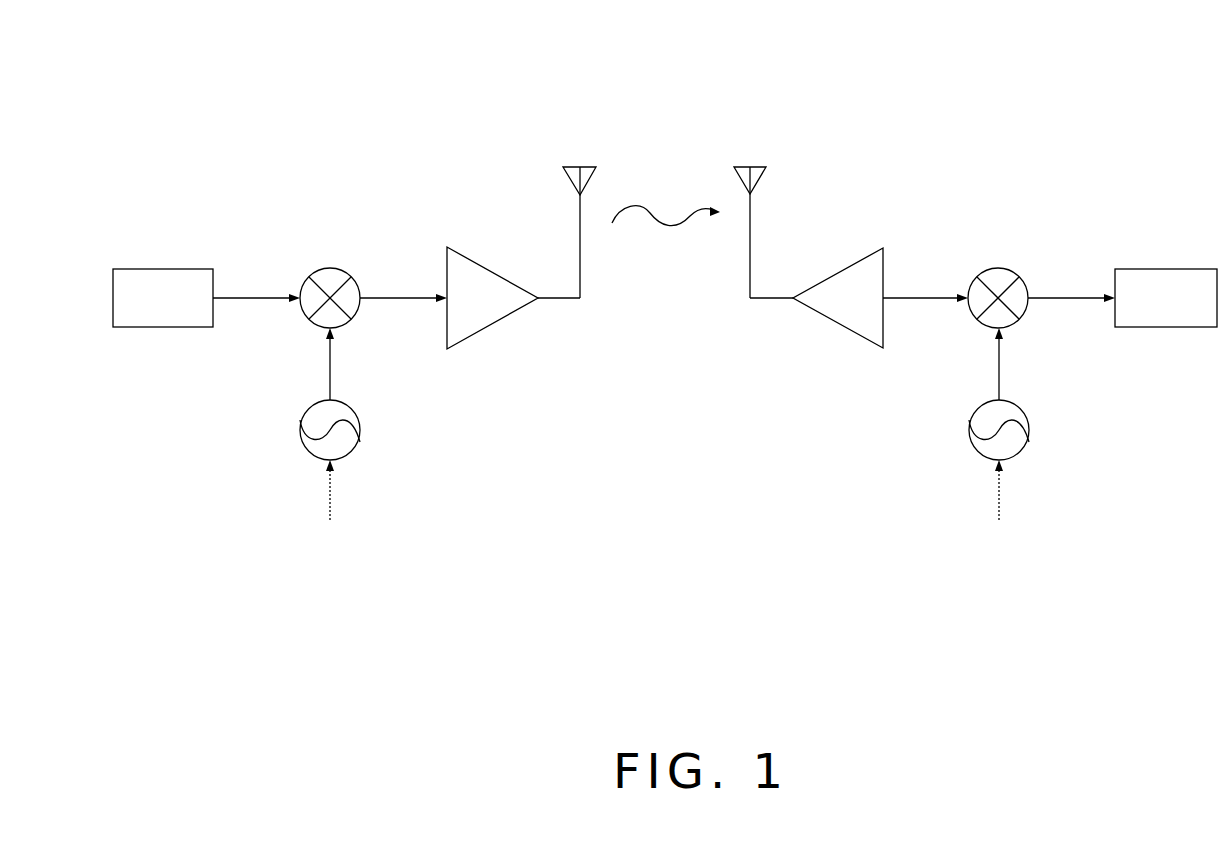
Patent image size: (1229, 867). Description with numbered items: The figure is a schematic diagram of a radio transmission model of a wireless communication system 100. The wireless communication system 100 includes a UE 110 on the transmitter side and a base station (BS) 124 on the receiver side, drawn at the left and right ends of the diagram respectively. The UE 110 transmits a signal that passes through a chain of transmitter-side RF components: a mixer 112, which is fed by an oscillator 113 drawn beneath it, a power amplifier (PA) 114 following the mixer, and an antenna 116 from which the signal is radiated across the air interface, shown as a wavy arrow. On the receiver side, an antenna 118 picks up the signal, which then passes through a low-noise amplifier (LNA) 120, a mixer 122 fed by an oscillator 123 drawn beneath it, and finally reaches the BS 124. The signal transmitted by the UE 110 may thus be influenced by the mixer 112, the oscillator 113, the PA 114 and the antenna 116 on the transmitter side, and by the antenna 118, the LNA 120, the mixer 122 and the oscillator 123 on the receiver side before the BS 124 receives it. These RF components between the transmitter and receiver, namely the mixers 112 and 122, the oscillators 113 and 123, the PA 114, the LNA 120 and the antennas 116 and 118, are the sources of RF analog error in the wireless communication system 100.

The wireless communication system 100 is at (1081, 57).
The UE 110 is at (144, 269).
The mixer 112 is at (325, 266).
The oscillator 113 is at (358, 418).
The power amplifier (PA) 114 is at (472, 259).
The antenna 116 is at (583, 166).
The antenna 118 is at (747, 165).
The low-noise amplifier (LNA) 120 is at (867, 255).
The mixer 122 is at (1000, 266).
The oscillator 123 is at (1027, 420).
The base station (BS) 124 is at (1148, 269).